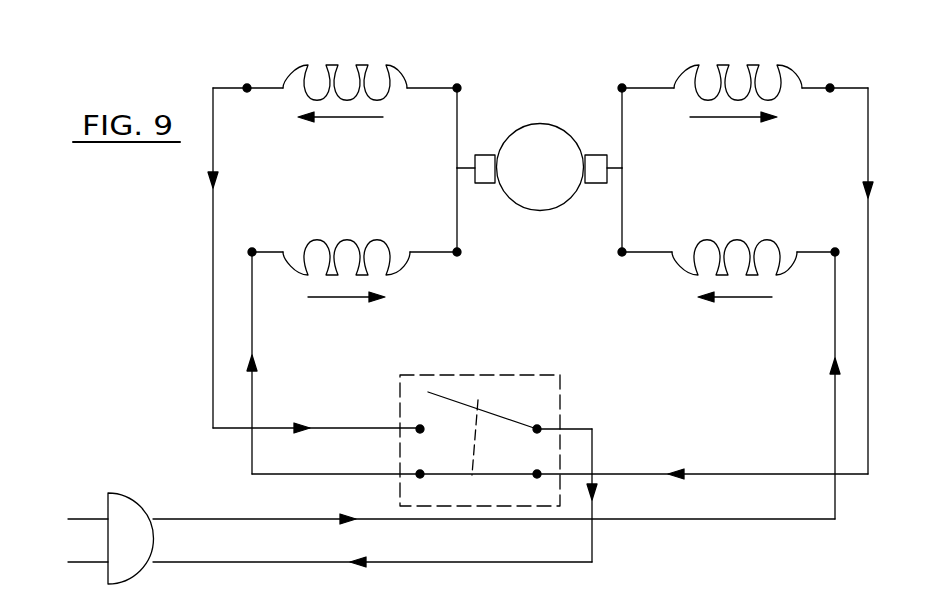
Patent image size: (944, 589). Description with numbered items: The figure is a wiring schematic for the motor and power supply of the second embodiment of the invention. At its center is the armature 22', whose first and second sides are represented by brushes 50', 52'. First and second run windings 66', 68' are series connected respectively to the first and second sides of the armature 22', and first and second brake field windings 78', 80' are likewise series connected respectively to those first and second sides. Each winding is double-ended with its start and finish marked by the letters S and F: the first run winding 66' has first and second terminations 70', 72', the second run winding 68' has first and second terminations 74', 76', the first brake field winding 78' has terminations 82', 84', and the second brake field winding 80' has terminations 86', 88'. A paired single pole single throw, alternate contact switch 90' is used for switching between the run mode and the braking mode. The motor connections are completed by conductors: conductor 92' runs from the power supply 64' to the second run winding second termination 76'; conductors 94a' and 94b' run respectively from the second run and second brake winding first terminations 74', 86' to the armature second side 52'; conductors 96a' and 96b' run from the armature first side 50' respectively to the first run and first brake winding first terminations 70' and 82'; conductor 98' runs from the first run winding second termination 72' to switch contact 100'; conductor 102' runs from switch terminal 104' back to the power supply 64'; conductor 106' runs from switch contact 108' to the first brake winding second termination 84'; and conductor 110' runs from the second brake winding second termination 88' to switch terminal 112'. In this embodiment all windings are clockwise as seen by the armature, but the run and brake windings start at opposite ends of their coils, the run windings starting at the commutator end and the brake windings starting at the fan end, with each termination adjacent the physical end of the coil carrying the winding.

The armature 22' is at (540, 139).
The brush 50' is at (487, 139).
The brush 52' is at (592, 140).
The power supply 64' is at (189, 511).
The first run winding 66' is at (339, 64).
The second run winding 68' is at (729, 227).
The first termination of first run winding 70' is at (474, 61).
The second termination of first run winding 72' is at (223, 59).
The first termination of second run winding 74' is at (612, 276).
The second termination of second run winding 76' is at (817, 228).
The first brake field winding 78' is at (340, 238).
The second brake field winding 80' is at (734, 63).
The first termination of first brake field winding 82' is at (479, 267).
The second termination of first brake field winding 84' is at (247, 225).
The first termination of second brake field winding 86' is at (600, 59).
The second termination of second brake field winding 88' is at (857, 56).
The alternate contact switch 90' is at (480, 415).
The conductor 92' is at (804, 385).
The conductor 94a' is at (660, 210).
The conductor 94b' is at (661, 128).
The conductor 96a' is at (418, 128).
The conductor 96b' is at (422, 210).
The conductor 98' is at (185, 258).
The switch contact 100' is at (384, 401).
The conductor 102' is at (418, 498).
The switch terminal 104' is at (583, 401).
The conductor 106' is at (223, 363).
The switch contact 108' is at (377, 453).
The conductor 110' is at (836, 281).
The switch terminal 112' is at (595, 449).